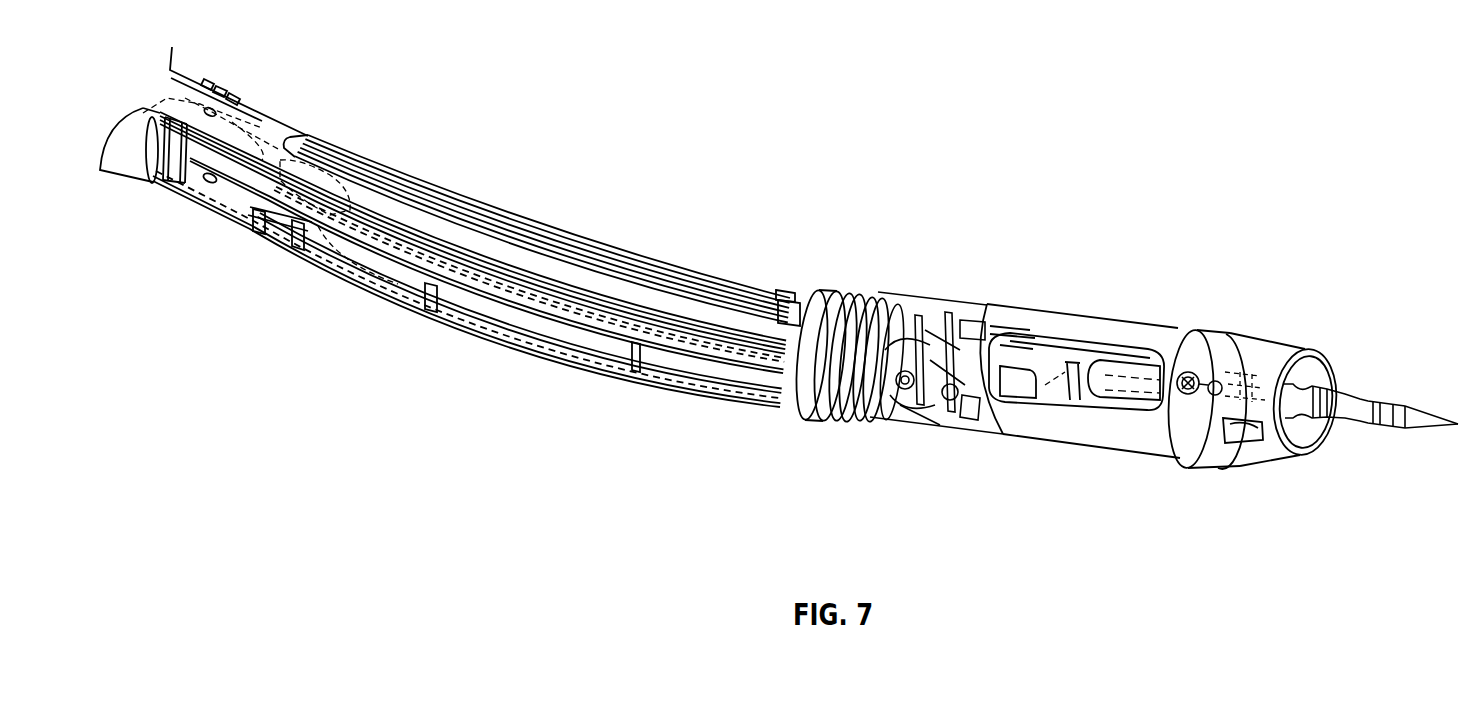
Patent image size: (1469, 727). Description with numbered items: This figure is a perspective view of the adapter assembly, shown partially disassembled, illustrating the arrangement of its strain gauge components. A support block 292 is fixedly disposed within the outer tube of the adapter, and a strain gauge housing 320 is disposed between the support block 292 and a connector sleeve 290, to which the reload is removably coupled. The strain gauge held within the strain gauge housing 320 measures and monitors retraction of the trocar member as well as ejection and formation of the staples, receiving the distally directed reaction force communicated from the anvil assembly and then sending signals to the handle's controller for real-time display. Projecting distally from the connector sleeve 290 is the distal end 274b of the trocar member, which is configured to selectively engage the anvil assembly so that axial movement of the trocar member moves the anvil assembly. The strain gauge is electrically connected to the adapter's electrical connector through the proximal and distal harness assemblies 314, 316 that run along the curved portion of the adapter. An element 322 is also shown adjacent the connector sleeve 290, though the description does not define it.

The proximal harness assembly 314 is at (353, 263).
The distal harness assembly 316 is at (500, 317).
The support block 292 is at (903, 430).
The strain gauge housing 320 is at (970, 423).
The fastener 322 is at (1222, 367).
The connector sleeve 290 is at (1283, 340).
The distal end of trocar member 274b is at (1357, 398).